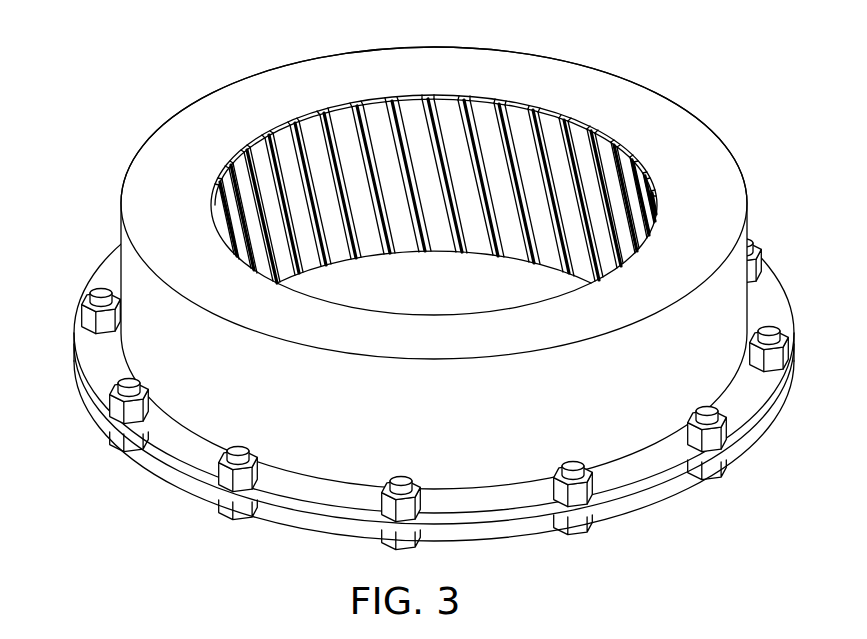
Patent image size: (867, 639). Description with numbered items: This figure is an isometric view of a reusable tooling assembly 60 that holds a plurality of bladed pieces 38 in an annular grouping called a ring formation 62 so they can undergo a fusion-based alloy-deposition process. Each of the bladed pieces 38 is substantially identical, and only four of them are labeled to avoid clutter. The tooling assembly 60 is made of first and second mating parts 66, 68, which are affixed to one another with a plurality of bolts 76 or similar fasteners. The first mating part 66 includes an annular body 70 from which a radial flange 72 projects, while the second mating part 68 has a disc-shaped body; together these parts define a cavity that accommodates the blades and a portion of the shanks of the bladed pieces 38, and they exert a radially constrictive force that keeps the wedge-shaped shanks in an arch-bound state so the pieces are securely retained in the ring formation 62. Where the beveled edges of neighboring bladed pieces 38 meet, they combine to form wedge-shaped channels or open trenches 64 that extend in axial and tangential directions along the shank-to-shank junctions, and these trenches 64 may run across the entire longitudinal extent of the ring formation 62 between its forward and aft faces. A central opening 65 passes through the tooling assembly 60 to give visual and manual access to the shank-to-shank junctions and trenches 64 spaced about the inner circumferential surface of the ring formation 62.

The tooling assembly 60 is at (180, 88).
The first mating part 66 is at (660, 112).
The annular body 70 is at (712, 145).
The radial flange 72 is at (107, 270).
The second mating part 68 is at (648, 496).
The bolts 76 is at (82, 310).
The ring formation 62 is at (433, 232).
The central opening 65 is at (372, 294).
The bladed piece 38 is at (413, 100).
The trenches 64 is at (445, 125).